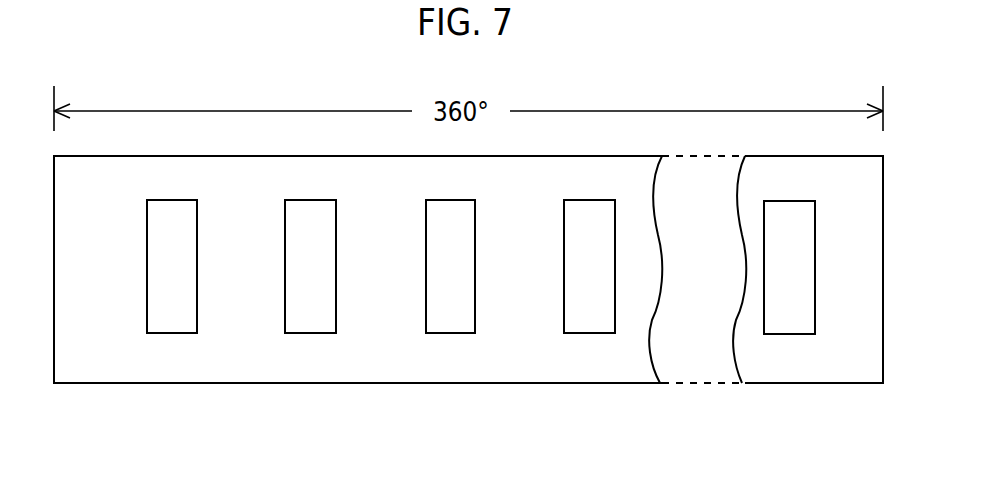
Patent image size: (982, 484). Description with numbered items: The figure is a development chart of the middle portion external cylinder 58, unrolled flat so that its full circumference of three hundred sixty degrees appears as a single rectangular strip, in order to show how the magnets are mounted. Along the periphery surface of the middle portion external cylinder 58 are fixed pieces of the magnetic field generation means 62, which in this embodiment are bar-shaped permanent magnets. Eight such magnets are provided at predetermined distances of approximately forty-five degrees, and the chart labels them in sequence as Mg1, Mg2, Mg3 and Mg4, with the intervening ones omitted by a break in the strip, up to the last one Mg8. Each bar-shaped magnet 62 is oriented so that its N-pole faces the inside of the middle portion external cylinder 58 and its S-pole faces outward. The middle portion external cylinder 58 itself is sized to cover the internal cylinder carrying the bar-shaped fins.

The middle portion external cylinder 58 is at (332, 363).
The magnetic field generation means 62 is at (520, 324).
The magnet 1 Mg1 is at (172, 266).
The magnet 2 Mg2 is at (310, 266).
The magnet 3 Mg3 is at (450, 266).
The magnet 4 Mg4 is at (589, 266).
The magnet 8 Mg8 is at (789, 267).